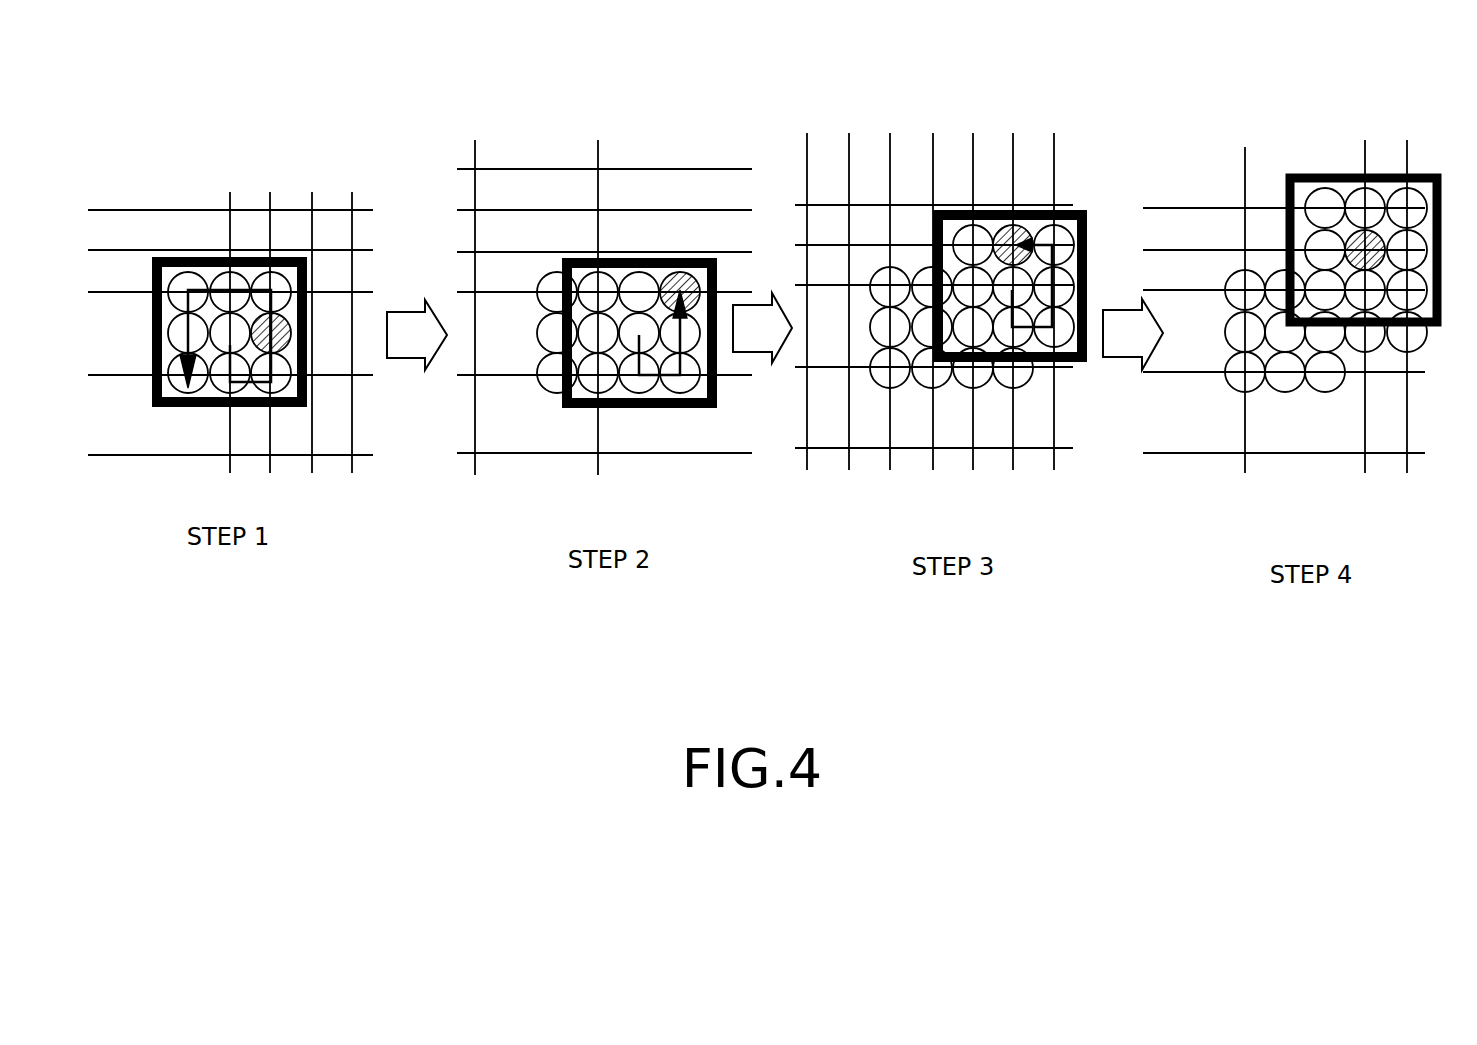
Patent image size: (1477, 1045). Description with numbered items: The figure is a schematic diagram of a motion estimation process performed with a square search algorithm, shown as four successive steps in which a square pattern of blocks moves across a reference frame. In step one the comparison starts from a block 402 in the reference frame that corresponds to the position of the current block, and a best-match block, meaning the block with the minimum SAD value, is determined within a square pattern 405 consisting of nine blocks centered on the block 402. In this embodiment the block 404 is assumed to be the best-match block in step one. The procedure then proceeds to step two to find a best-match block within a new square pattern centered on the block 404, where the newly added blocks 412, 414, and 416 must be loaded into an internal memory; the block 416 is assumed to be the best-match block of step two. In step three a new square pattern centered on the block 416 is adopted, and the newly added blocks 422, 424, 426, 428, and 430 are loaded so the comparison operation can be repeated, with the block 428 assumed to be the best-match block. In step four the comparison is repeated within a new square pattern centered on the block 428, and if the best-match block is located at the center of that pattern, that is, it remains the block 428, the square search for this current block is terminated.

The block 402 is at (230, 322).
The block 404 is at (262, 318).
The square pattern 405 is at (152, 395).
The block 412 is at (682, 388).
The block 414 is at (713, 377).
The block 416 is at (673, 277).
The block 422 is at (1058, 338).
The block 424 is at (1065, 282).
The block 426 is at (1063, 247).
The block 428 is at (1018, 228).
The block 430 is at (967, 228).